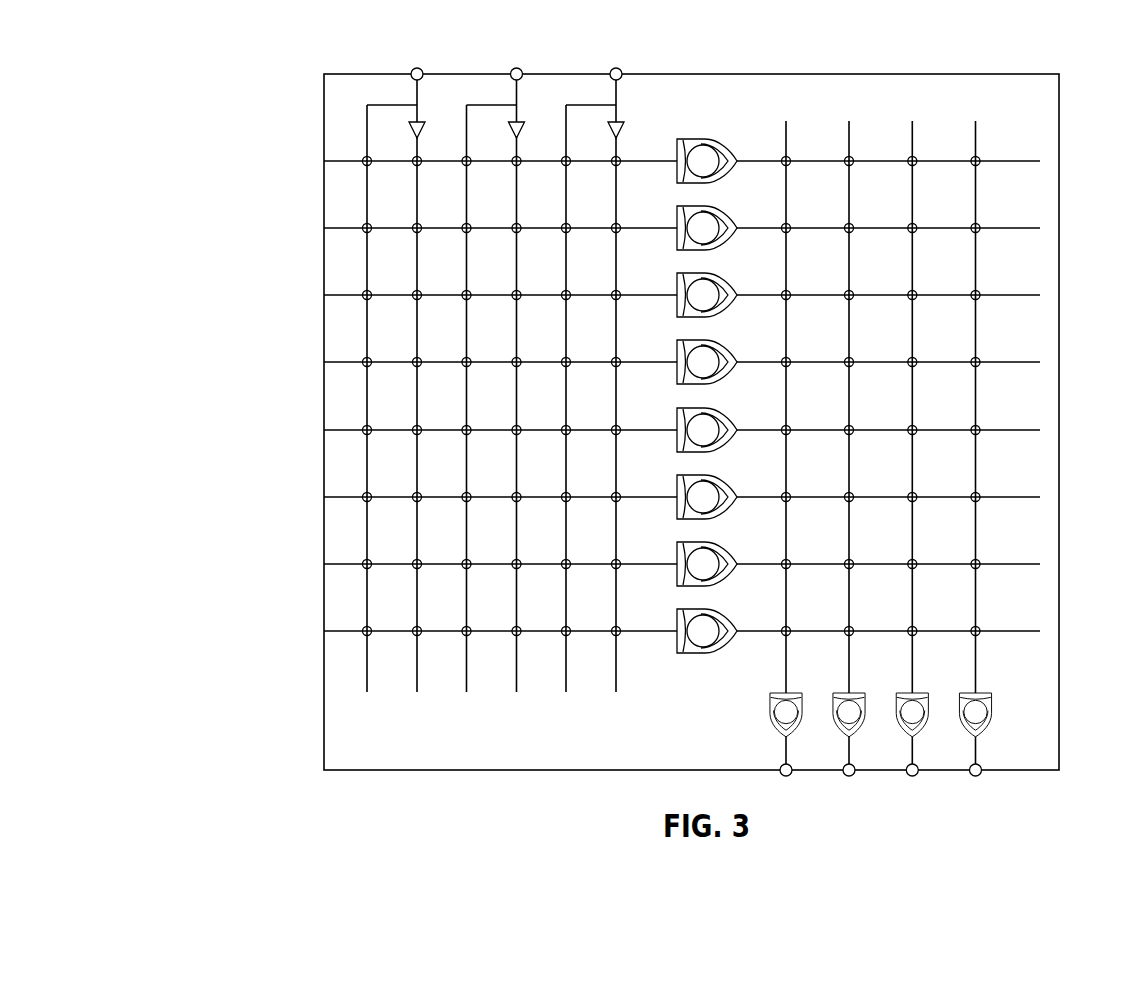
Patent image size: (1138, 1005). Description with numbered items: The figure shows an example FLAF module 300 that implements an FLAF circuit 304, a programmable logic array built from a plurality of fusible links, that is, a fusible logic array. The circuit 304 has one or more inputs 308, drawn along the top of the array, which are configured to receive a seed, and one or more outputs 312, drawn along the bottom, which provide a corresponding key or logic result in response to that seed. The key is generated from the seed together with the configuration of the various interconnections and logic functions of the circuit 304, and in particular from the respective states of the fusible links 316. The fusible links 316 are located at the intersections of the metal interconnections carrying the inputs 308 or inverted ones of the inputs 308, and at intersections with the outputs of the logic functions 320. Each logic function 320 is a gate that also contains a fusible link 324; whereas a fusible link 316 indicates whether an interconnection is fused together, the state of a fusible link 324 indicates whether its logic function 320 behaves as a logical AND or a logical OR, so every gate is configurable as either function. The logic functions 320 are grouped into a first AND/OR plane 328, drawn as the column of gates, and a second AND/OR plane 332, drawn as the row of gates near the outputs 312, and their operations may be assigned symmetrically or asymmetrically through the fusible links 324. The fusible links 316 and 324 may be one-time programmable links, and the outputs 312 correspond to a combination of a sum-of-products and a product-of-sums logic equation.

The FLAF module 300 is at (232, 98).
The FLAF circuit 304 is at (510, 725).
The inputs 308 is at (452, 49).
The outputs 312 is at (879, 789).
The fusible links 316 is at (363, 226).
The logic functions 320 is at (732, 620).
The fusible links 324 is at (693, 140).
The first AND/OR plane 328 is at (721, 450).
The second AND/OR plane 332 is at (885, 421).